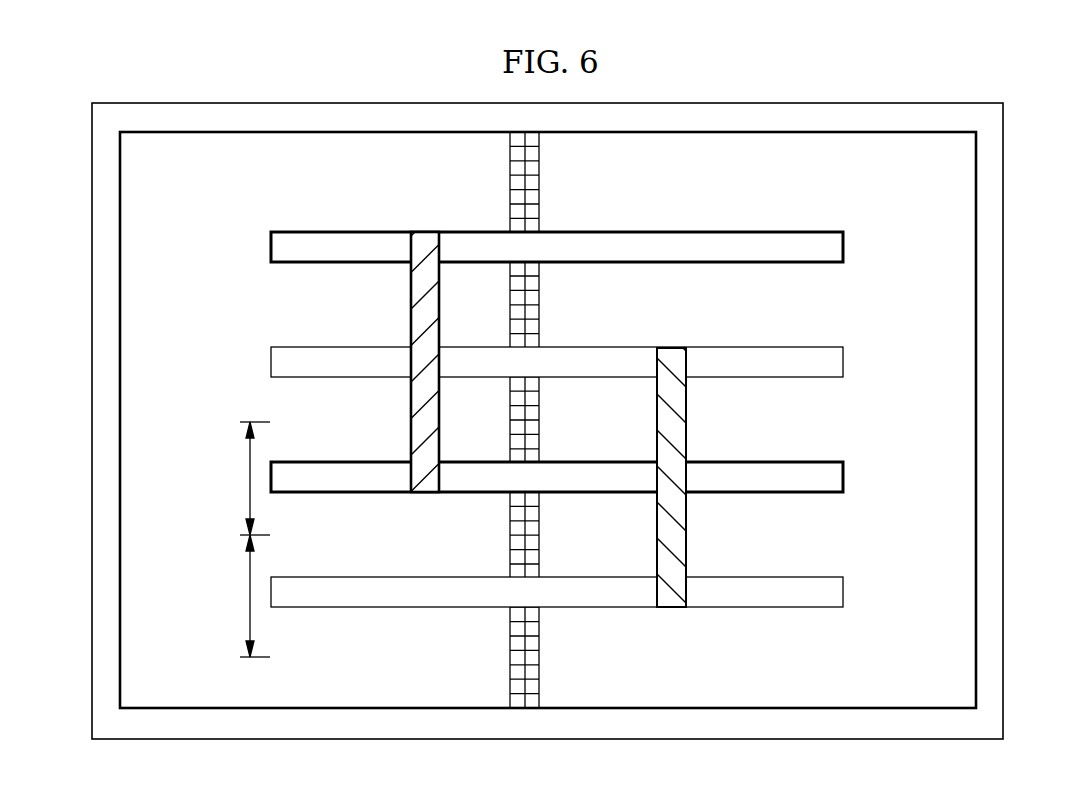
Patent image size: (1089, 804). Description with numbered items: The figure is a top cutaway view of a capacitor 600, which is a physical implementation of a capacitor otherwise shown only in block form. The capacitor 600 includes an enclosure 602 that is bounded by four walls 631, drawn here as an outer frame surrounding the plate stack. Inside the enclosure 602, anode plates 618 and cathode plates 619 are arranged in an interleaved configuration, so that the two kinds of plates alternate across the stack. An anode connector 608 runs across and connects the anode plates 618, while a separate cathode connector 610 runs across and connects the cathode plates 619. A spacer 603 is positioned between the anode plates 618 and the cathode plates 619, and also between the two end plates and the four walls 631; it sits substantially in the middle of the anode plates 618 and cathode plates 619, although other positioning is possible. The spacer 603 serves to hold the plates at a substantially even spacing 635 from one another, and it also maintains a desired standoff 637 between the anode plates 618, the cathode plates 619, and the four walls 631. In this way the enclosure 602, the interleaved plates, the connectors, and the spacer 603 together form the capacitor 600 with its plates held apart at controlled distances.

The capacitor 600 is at (376, 75).
The enclosure 602 is at (745, 102).
The spacer 603 is at (540, 182).
The anode connector 608 is at (410, 421).
The cathode connector 610 is at (686, 545).
The anode plates 618 is at (357, 232).
The cathode plates 619 is at (359, 347).
The four walls 631 is at (226, 102).
The even spacing 635 is at (250, 479).
The standoff 637 is at (250, 599).